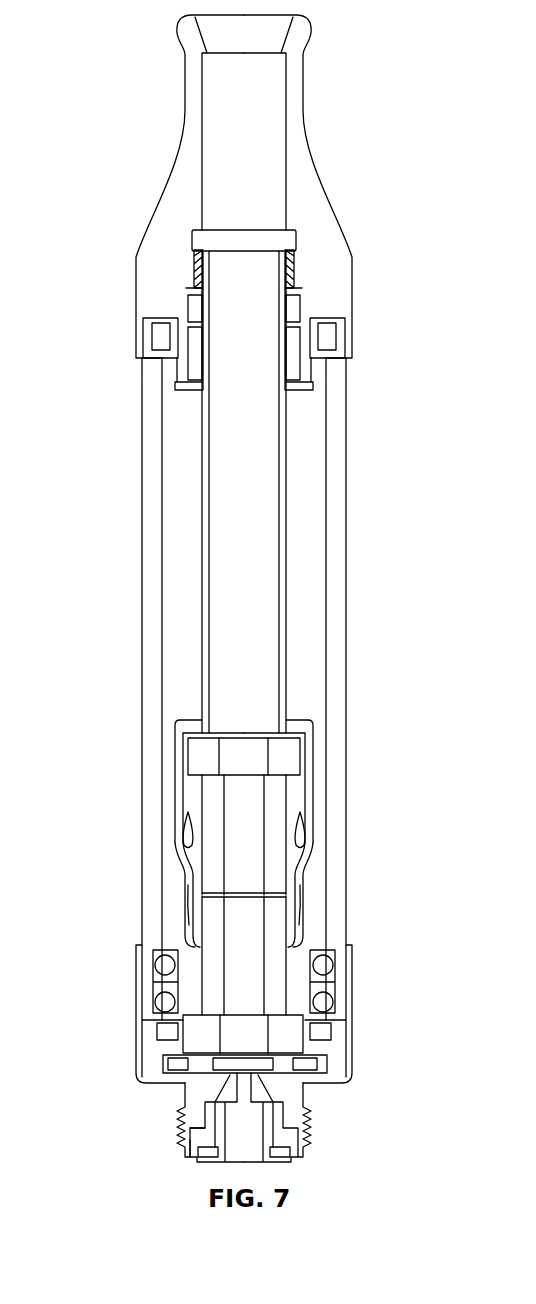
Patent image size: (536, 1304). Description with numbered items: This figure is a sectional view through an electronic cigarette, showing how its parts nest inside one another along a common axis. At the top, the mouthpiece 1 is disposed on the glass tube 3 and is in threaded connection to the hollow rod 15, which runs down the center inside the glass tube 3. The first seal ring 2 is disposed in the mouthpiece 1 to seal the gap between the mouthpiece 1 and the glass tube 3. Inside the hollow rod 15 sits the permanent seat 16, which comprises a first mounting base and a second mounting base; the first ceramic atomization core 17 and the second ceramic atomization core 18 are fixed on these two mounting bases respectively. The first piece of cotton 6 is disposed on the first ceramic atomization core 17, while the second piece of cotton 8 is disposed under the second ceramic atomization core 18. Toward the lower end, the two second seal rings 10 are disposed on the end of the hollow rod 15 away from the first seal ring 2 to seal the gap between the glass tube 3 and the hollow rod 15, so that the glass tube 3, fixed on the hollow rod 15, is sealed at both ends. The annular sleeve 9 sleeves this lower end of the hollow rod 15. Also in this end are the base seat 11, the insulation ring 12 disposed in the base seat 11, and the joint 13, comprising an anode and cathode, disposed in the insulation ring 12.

The mouthpiece 1 is at (302, 130).
The first seal ring 2 is at (337, 343).
The glass tube 3 is at (346, 595).
The first piece of cotton 6 is at (292, 757).
The second piece of cotton 8 is at (292, 1030).
The annular sleeve 9 is at (136, 1033).
The second seal rings 10 is at (163, 965).
The base seat 11 is at (295, 1117).
The insulation ring 12 is at (200, 1107).
The joint 13 is at (185, 1157).
The hollow rod 15 is at (280, 458).
The permanent seat 16 is at (295, 847).
The first ceramic atomization core 17 is at (215, 835).
The second ceramic atomization core 18 is at (278, 932).